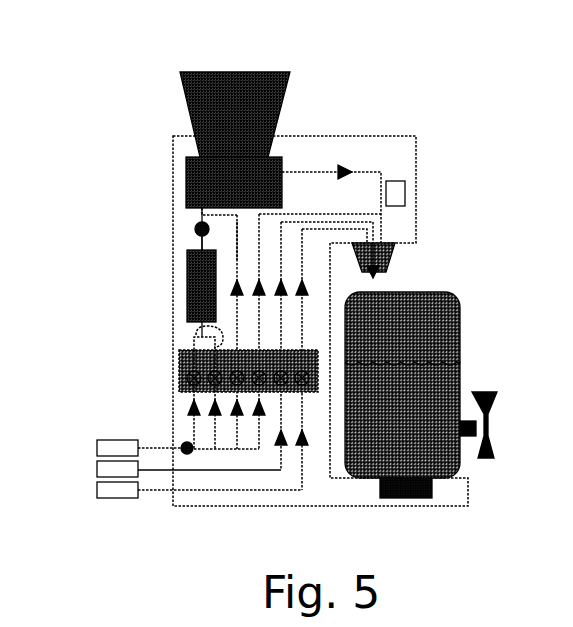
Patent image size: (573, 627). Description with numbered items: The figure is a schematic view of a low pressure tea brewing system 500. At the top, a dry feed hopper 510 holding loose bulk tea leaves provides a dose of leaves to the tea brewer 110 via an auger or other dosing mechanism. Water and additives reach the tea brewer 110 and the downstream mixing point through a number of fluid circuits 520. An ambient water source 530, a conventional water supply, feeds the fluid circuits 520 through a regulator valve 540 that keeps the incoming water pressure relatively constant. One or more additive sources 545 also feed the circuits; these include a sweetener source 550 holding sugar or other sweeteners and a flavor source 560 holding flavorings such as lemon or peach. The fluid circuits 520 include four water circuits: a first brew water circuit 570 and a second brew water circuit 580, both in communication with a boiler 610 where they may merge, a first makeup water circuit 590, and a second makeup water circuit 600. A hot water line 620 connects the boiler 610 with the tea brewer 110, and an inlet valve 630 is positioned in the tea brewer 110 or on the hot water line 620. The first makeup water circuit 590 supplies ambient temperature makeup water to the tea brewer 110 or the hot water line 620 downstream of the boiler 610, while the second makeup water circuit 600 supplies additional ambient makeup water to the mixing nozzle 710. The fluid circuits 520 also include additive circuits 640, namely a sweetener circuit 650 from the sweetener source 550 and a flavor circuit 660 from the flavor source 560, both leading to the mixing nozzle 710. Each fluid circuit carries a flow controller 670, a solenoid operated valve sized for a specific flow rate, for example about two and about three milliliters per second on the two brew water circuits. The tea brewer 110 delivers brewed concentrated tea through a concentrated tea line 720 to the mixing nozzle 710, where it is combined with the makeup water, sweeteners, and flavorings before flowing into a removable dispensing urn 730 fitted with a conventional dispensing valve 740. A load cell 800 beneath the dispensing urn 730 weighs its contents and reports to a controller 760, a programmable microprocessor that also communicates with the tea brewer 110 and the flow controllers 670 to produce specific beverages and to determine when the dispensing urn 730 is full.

The low pressure tea brewing system 500 is at (120, 66).
The dry feed hopper 510 is at (186, 111).
The tea brewer 110 is at (186, 176).
The concentrated tea line 720 is at (318, 171).
The second makeup water circuit 600 is at (258, 247).
The controller 760 is at (405, 193).
The inlet valve 630 is at (195, 229).
The hot water line 620 is at (200, 244).
The first makeup water circuit 590 is at (238, 227).
The boiler 610 is at (187, 296).
The second brew water circuit 580 is at (190, 336).
The first brew water circuit 570 is at (192, 338).
The fluid circuits 520 is at (176, 412).
The flow controller 670 is at (212, 377).
The regulator valve 540 is at (182, 445).
The ambient water source 530 is at (97, 446).
The sweetener source 550 is at (97, 468).
The flavor source 560 is at (97, 490).
The additive source 545 is at (99, 500).
The additive circuit 640 is at (198, 491).
The sweetener circuit 650 is at (258, 470).
The flavor circuit 660 is at (273, 490).
The mixing nozzle 710 is at (392, 264).
The dispensing urn 730 is at (458, 303).
The dispensing valve 740 is at (498, 430).
The load cell 800 is at (418, 500).